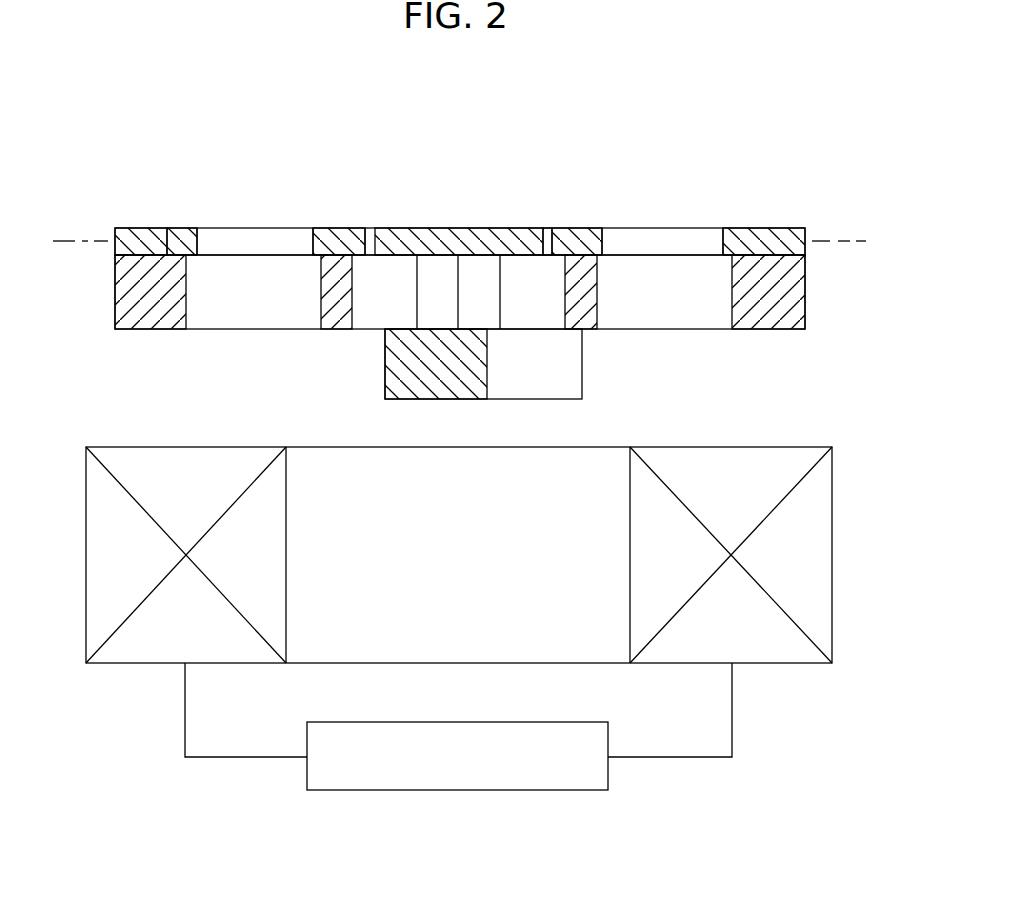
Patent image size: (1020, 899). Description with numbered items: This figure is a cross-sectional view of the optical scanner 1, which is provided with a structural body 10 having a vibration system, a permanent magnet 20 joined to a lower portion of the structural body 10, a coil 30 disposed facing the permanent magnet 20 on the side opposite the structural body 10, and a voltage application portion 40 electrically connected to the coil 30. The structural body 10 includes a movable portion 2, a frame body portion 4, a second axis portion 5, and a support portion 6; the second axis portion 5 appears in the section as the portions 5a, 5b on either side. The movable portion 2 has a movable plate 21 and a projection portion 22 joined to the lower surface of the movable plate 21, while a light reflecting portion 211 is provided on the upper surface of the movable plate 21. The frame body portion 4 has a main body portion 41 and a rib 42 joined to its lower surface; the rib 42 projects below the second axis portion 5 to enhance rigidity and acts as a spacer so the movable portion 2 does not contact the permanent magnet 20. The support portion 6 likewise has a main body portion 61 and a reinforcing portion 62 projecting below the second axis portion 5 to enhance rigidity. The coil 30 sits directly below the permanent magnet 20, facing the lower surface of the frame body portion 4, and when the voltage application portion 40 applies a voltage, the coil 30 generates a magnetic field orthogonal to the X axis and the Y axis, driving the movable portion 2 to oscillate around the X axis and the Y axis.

The optical scanner 1 is at (741, 120).
The movable portion 2 is at (620, 156).
The frame body portion 4 is at (386, 156).
The second axis portion 5 is at (460, 205).
The first surface of substrate 5a is at (688, 240).
The second surface of substrate 5b is at (246, 240).
The support portion 6 is at (208, 156).
The structural body 10 is at (790, 228).
The permanent magnet 20 is at (569, 374).
The movable plate 21 is at (524, 248).
The projection portion 22 is at (490, 293).
The light reflecting portion 211 is at (491, 231).
The coil 30 is at (785, 447).
The voltage application portion 40 is at (609, 738).
The main body portion 41 is at (327, 236).
The rib 42 is at (342, 263).
The main body portion 61 is at (150, 228).
The reinforcing portion 62 is at (170, 263).
The X axis X is at (838, 240).
The Y axis Y is at (458, 242).